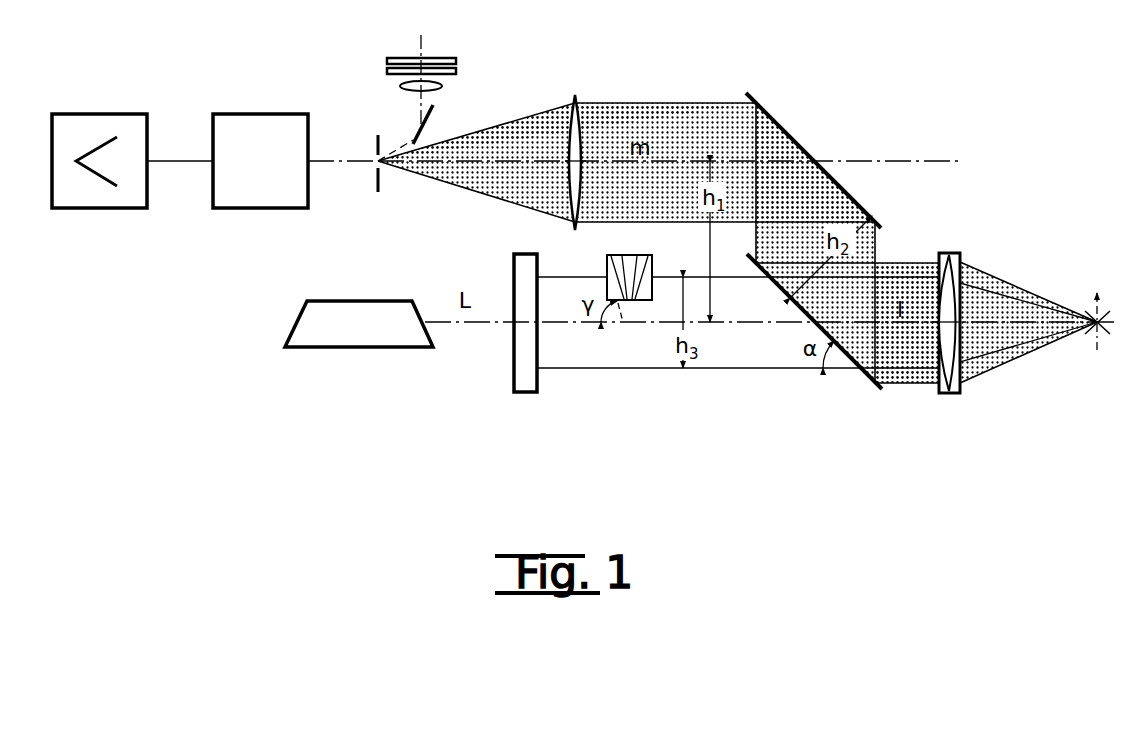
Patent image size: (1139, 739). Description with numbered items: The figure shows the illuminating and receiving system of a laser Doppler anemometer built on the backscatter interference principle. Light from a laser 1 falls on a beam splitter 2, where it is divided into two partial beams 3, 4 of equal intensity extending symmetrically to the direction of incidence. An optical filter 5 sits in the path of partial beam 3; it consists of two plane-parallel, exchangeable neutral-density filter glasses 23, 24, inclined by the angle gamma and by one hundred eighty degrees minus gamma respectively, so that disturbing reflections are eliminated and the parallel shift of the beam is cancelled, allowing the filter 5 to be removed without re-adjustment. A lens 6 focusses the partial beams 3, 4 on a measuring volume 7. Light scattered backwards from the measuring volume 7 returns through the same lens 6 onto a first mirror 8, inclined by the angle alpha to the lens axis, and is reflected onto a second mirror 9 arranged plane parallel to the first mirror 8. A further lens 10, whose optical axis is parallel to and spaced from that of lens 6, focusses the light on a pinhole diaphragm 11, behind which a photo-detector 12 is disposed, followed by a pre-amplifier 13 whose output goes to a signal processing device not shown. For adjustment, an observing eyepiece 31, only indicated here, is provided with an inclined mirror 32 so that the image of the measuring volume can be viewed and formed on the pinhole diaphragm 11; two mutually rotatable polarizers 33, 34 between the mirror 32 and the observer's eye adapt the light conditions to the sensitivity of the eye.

The laser 1 is at (293, 313).
The beam splitter 2 is at (527, 393).
The partial beam 3 is at (572, 264).
The partial beam 4 is at (817, 362).
The optical filter 5 is at (874, 287).
The lens 6 is at (950, 395).
The measuring volume 7 is at (1097, 338).
The first mirror 8 is at (870, 388).
The second mirror 9 is at (787, 133).
The lens 10 is at (575, 93).
The pinhole diaphragm 11 is at (373, 181).
The photo-detector 12 is at (265, 208).
The pre-amplifier 13 is at (99, 208).
The neutral-density filter 23 is at (618, 265).
The neutral-density filter 24 is at (643, 265).
The observing eyepiece 31 is at (399, 86).
The mirror 32 is at (436, 112).
The polarizer 33 is at (456, 71).
The polarizer 34 is at (456, 59).